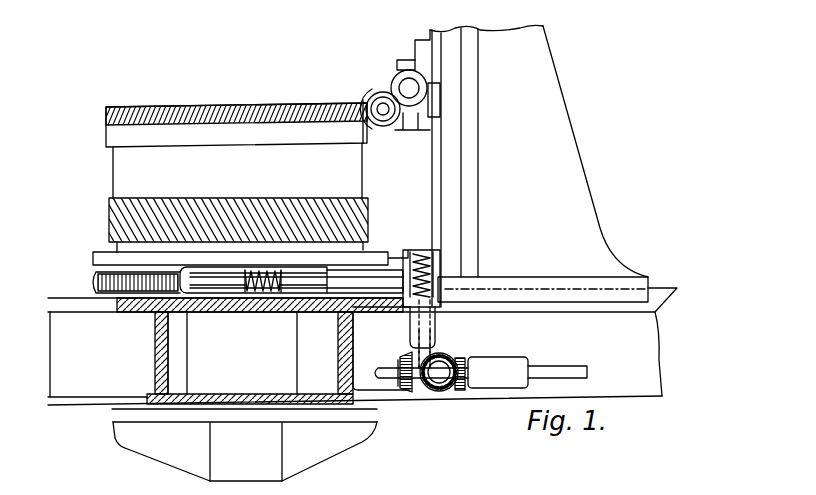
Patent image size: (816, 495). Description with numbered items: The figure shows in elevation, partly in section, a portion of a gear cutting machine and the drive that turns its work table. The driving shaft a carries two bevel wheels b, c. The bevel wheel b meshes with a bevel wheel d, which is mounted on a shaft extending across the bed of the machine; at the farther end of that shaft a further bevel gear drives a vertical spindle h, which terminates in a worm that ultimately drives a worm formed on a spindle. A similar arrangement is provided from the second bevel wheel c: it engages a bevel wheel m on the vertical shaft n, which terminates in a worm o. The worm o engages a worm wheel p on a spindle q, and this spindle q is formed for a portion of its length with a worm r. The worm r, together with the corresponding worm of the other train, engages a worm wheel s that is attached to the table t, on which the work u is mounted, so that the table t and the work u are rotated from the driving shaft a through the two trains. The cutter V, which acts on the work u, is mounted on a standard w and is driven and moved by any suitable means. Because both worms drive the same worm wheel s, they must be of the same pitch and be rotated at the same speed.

The driving shaft a is at (588, 373).
The bevel wheel b is at (463, 395).
The bevel wheel c is at (407, 395).
The bevel wheel d is at (436, 395).
The vertical spindle h is at (440, 333).
The bevel wheel m is at (400, 357).
The vertical shaft n is at (427, 325).
The worm o is at (427, 306).
The worm wheel p is at (418, 250).
The spindle q is at (330, 282).
The worm r is at (265, 298).
The worm wheel s is at (92, 282).
The table t is at (93, 260).
The work u is at (127, 178).
The cutter V is at (393, 90).
The standard w is at (531, 166).